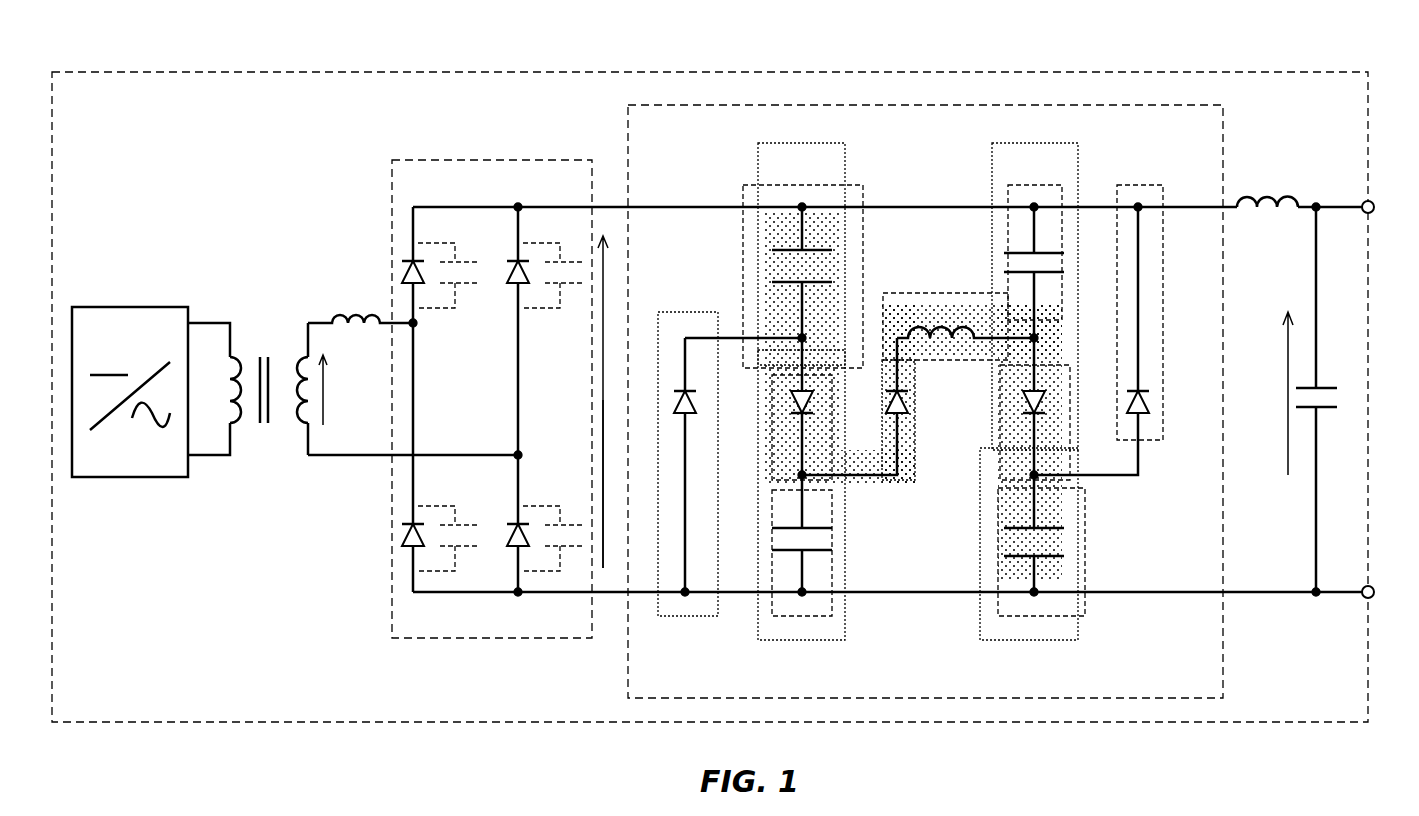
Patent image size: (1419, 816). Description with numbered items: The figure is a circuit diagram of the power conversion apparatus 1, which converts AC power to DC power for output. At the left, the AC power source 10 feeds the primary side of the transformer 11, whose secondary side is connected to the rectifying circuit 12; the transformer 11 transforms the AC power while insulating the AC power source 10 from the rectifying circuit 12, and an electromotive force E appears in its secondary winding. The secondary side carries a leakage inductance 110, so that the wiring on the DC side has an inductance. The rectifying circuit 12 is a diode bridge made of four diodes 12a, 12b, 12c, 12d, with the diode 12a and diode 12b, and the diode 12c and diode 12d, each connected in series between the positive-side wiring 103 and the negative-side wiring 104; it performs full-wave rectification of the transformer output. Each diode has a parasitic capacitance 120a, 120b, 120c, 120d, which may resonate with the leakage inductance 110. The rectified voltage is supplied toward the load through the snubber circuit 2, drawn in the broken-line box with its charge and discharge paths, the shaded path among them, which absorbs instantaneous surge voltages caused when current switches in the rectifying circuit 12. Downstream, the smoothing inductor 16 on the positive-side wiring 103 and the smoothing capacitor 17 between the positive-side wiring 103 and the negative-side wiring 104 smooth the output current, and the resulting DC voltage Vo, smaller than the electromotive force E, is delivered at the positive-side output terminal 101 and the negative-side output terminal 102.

The power conversion apparatus 1 is at (292, 72).
The snubber circuit 2 is at (655, 105).
The AC power source 10 is at (158, 307).
The transformer 11 is at (378, 483).
The leakage inductance 110 is at (348, 323).
The rectifying circuit 12 is at (400, 160).
The diode 12a is at (405, 262).
The diode 12b is at (405, 548).
The diode 12c is at (512, 262).
The diode 12d is at (512, 548).
The parasitic capacitance 120a is at (470, 290).
The parasitic capacitance 120b is at (475, 523).
The parasitic capacitance 120c is at (578, 290).
The parasitic capacitance 120d is at (580, 523).
The positive-side wiring 103 is at (610, 207).
The negative-side wiring 104 is at (612, 592).
The smoothing inductor 16 is at (1287, 182).
The smoothing capacitor 17 is at (1325, 407).
The positive-side output terminal 101 is at (1375, 205).
The negative-side output terminal 102 is at (1375, 598).